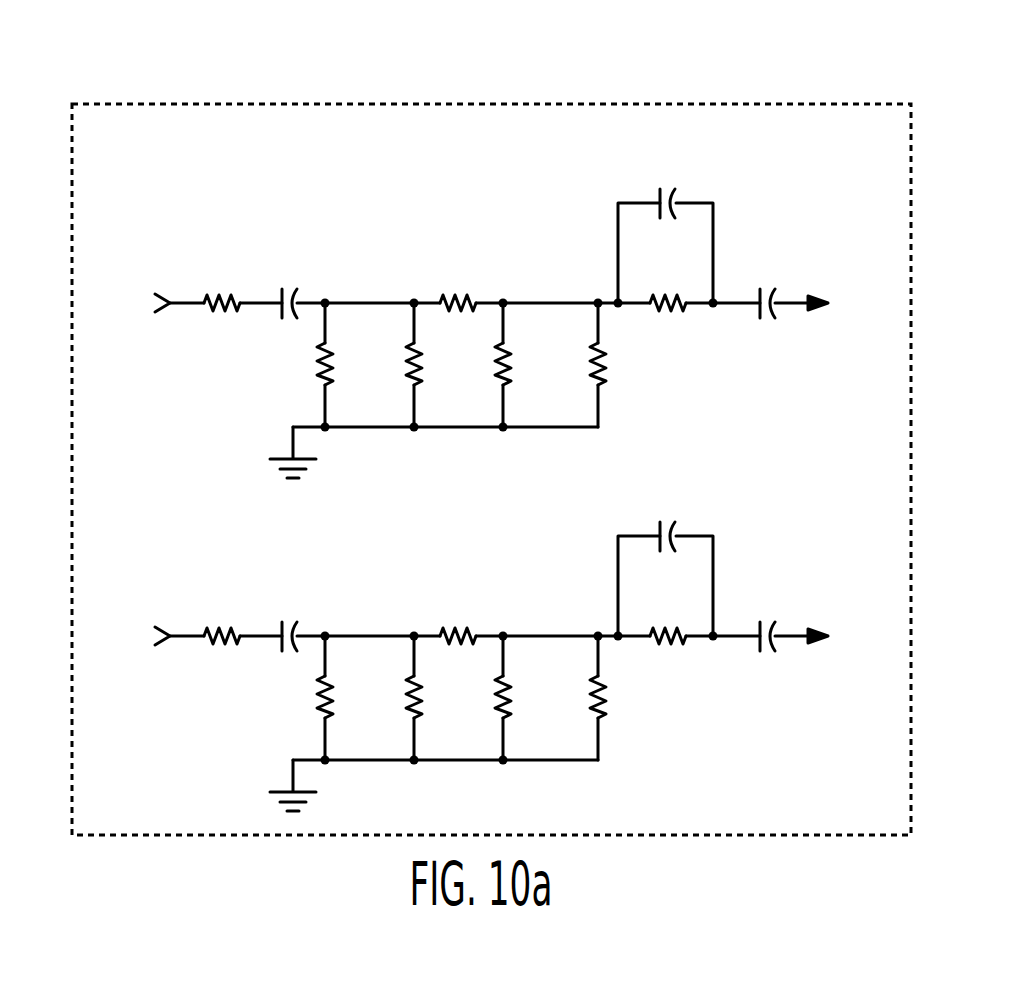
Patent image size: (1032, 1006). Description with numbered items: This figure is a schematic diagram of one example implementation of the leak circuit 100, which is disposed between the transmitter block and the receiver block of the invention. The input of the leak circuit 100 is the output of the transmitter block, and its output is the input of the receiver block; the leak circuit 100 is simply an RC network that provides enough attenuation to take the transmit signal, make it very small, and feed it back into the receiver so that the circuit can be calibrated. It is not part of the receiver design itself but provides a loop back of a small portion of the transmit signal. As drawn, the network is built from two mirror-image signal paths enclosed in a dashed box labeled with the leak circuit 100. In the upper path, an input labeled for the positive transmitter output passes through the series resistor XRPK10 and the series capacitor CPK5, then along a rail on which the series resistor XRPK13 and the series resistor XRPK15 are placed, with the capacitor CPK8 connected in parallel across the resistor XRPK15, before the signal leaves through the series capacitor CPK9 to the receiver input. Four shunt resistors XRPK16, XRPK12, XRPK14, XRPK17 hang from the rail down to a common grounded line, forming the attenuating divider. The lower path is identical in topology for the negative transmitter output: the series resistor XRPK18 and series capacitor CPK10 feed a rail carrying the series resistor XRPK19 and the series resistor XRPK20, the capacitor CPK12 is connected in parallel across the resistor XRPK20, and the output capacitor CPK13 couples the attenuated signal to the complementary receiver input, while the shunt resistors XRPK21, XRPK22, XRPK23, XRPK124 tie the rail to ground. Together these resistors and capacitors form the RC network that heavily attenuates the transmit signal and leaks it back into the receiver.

The leak circuit 100 is at (491, 443).
The resistor 30K XRPK10 is at (222, 334).
The capacitor 1P CPK5 is at (288, 274).
The resistor 30K XRPK13 is at (462, 273).
The resistor 4K XRPK16 is at (358, 364).
The resistor 4K XRPK12 is at (446, 364).
The resistor 4K XRPK14 is at (536, 364).
The resistor 4K XRPK17 is at (632, 364).
The capacitor 0.1P CPK8 is at (668, 173).
The resistor 30K XRPK15 is at (667, 269).
The capacitor 1P CPK9 is at (770, 273).
The resistor 30K XRPK18 is at (222, 667).
The capacitor 1P CPK10 is at (288, 607).
The resistor 30K XRPK19 is at (462, 606).
The resistor 4K XRPK21 is at (358, 697).
The resistor 4K XRPK22 is at (446, 697).
The resistor 4K XRPK23 is at (536, 697).
The resistor 4K XRPK124 is at (637, 697).
The capacitor 0.1P CPK12 is at (668, 506).
The resistor 30K XRPK20 is at (667, 602).
The capacitor 1P CPK13 is at (768, 606).